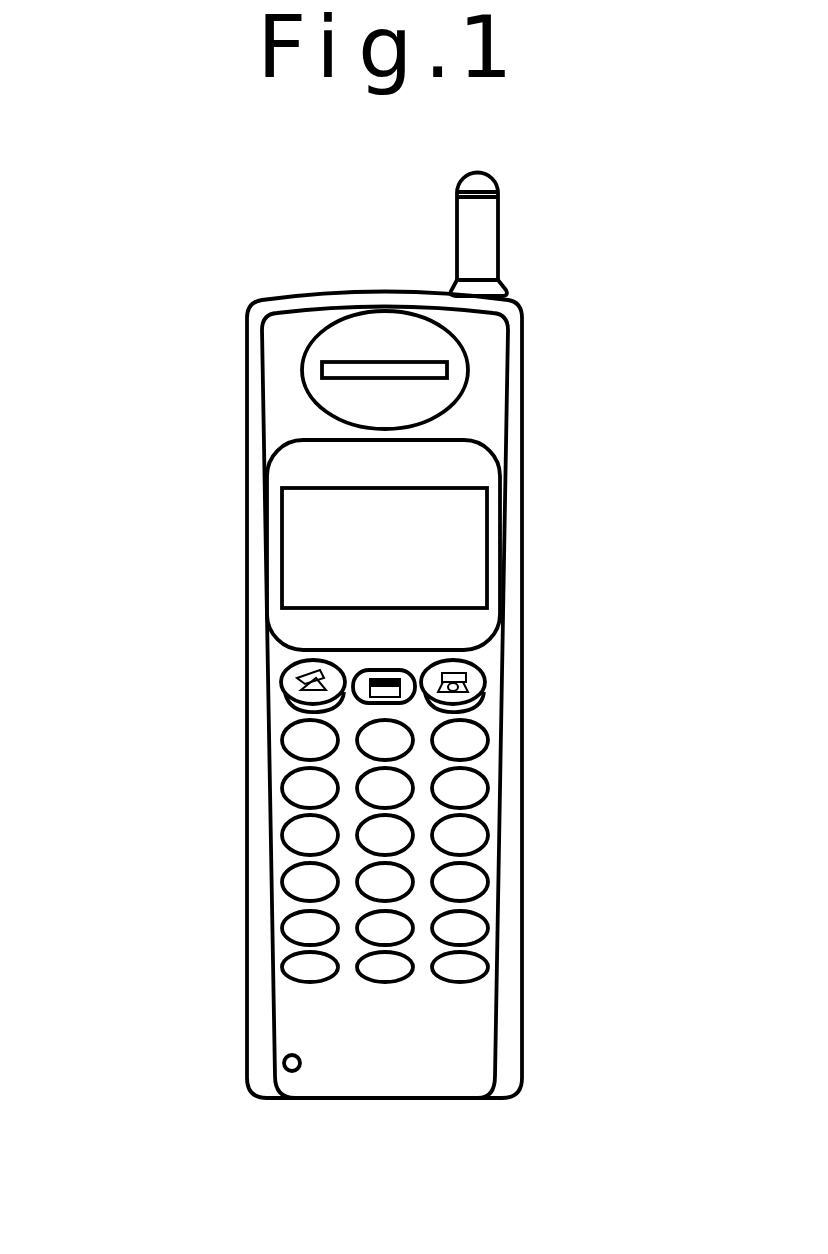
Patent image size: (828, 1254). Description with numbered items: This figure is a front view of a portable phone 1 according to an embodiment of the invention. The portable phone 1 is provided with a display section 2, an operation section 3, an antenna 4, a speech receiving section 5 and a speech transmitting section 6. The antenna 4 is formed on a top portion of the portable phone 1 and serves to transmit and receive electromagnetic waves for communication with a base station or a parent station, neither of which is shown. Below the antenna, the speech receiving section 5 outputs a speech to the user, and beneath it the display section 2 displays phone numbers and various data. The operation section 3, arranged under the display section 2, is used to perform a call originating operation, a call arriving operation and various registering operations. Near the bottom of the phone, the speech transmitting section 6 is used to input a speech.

The portable phone 1 is at (243, 377).
The display section 2 is at (457, 567).
The operation section 3 is at (233, 662).
The antenna 4 is at (493, 245).
The speech receiving section 5 is at (375, 330).
The speech transmitting section 6 is at (292, 1072).